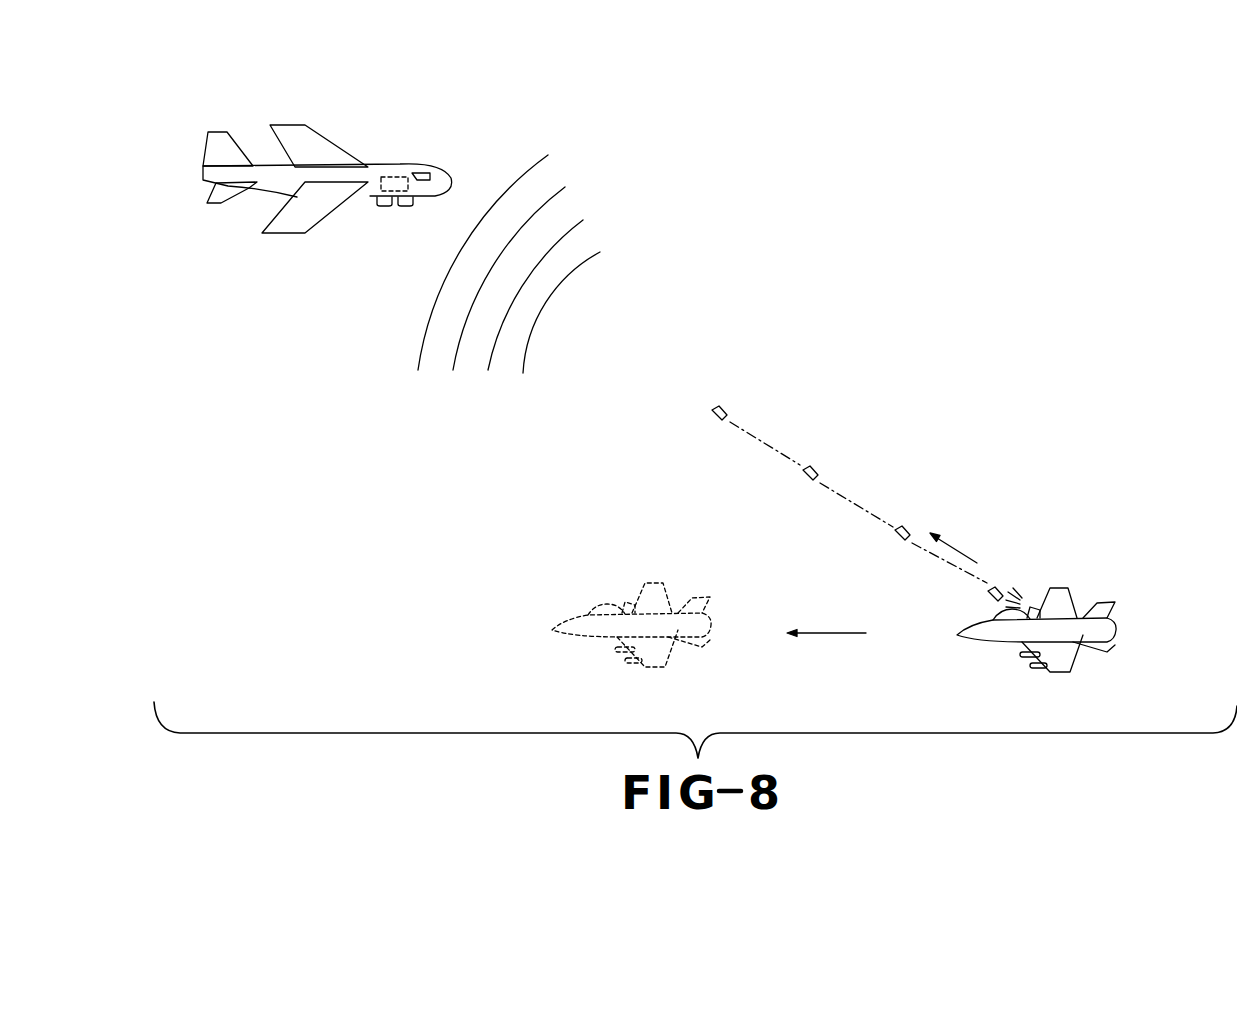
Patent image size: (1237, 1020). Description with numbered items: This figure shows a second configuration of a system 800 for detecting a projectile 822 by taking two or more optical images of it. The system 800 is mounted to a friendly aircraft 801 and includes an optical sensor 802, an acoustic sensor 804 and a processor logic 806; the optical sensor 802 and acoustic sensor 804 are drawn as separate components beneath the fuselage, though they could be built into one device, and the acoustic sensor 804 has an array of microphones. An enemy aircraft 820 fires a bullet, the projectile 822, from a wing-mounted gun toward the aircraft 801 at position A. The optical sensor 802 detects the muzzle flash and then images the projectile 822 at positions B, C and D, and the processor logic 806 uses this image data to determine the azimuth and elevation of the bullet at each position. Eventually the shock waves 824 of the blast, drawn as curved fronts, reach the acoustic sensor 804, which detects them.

The system 800 is at (332, 240).
The aircraft 801 is at (411, 162).
The optical sensor 802 is at (403, 207).
The acoustic sensor 804 is at (386, 207).
The processor logic 806 is at (390, 177).
The enemy aircraft 820 is at (992, 647).
The projectile 822 is at (722, 417).
The shock waves 824 is at (525, 270).